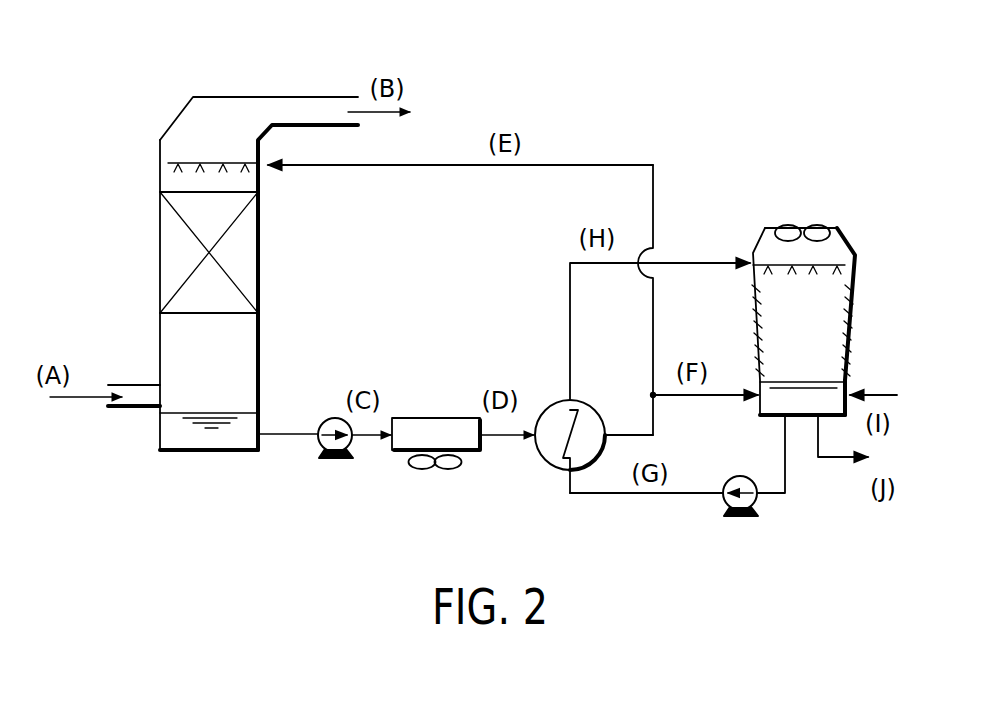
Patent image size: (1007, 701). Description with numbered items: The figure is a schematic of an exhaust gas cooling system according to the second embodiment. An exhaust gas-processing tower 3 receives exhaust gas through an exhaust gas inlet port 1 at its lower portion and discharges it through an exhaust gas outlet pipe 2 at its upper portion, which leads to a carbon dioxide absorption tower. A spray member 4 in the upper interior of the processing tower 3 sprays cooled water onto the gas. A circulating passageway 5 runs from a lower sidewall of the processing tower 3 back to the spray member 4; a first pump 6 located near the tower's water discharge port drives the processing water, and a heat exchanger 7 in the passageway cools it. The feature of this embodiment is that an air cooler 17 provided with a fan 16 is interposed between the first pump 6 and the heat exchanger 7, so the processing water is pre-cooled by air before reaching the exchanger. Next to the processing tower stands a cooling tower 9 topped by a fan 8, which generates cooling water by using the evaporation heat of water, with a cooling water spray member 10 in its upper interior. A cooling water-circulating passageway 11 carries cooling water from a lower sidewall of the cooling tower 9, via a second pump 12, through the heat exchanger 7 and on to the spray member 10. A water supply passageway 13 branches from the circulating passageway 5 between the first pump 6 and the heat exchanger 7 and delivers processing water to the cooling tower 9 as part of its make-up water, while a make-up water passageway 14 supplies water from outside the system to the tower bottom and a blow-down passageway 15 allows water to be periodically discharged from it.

The exhaust gas inlet port 1 is at (120, 383).
The exhaust gas outlet pipe 2 is at (298, 97).
The exhaust gas-processing tower 3 is at (281, 275).
The spray member 4 is at (187, 163).
The circulating passageway 5 is at (655, 195).
The first pump 6 is at (333, 463).
The heat exchanger 7 is at (593, 403).
The fan 8 is at (807, 223).
The cooling tower 9 is at (860, 311).
The cooling water spray member 10 is at (823, 262).
The cooling water-circulating passageway 11 is at (607, 497).
The second pump 12 is at (740, 523).
The water supply passageway 13 is at (710, 398).
The make-up water passageway 14 is at (882, 393).
The blow-down passageway 15 is at (835, 463).
The fan 16 is at (435, 480).
The air cooler 17 is at (434, 409).